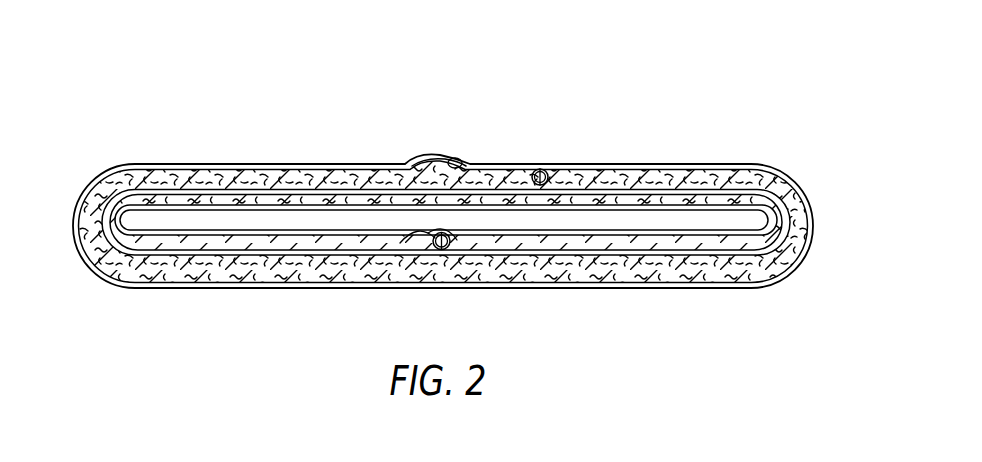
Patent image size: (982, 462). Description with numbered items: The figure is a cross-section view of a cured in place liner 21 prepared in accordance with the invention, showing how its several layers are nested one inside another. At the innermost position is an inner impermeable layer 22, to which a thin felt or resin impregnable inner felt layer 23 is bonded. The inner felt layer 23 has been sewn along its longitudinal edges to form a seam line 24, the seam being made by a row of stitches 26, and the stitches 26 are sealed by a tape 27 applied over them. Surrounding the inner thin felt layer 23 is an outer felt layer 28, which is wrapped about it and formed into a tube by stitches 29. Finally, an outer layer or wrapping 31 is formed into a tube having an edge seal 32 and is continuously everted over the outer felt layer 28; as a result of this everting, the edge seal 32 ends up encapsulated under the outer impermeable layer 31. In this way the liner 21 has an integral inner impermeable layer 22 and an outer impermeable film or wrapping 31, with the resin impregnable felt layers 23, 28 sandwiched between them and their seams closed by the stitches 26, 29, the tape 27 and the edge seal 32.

The cured in place liner 21 is at (565, 131).
The inner impermeable layer 22 is at (778, 172).
The inner felt layer 23 is at (357, 191).
The seam line 24 is at (422, 246).
The stitches 26 is at (455, 250).
The tape 27 is at (405, 250).
The outer felt layer 28 is at (745, 183).
The stitches 29 is at (596, 170).
The outer impermeable layer 31 is at (107, 165).
The edge seal 32 is at (432, 164).